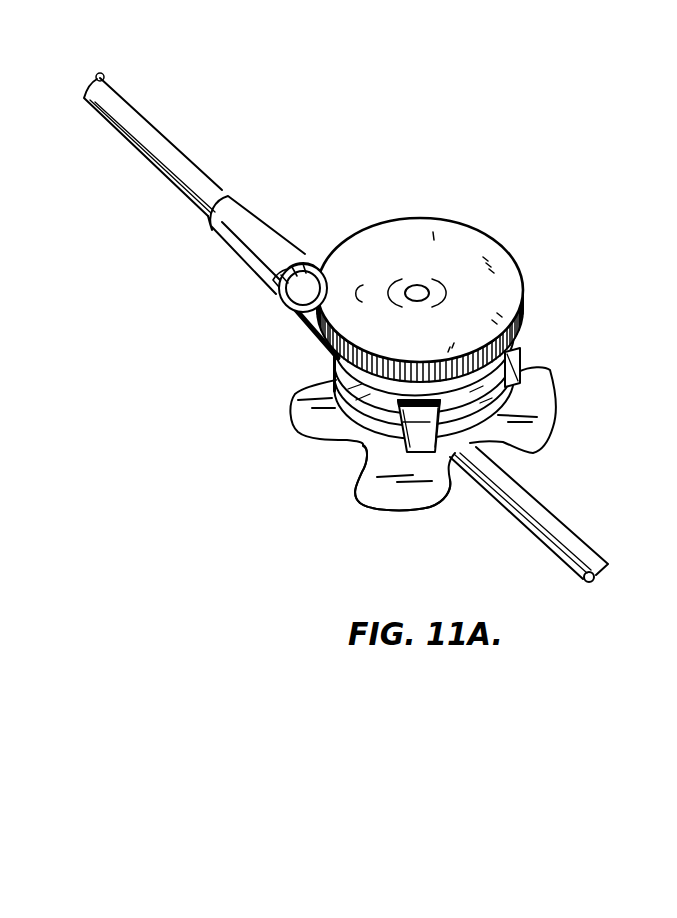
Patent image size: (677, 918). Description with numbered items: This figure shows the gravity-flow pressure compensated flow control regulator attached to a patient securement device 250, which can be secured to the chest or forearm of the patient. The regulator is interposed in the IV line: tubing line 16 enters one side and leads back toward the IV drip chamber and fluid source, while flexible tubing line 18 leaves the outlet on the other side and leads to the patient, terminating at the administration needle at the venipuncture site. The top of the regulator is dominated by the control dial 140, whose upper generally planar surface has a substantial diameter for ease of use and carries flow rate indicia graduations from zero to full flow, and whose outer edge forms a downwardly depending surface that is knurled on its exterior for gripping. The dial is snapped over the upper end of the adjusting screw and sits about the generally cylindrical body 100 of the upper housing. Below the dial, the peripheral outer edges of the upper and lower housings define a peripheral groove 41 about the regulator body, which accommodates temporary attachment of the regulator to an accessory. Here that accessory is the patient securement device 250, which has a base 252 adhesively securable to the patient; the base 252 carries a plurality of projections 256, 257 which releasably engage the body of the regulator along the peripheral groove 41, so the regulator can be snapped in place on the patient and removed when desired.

The tubing line 16 is at (166, 134).
The flexible tubing line 18 is at (545, 507).
The peripheral groove 41 is at (336, 379).
The generally cylindrical body 100 is at (429, 296).
The control dial 140 is at (503, 198).
The patient securement device 250 is at (255, 432).
The base 252 is at (363, 500).
The projection 256 is at (415, 437).
The projection 257 is at (521, 375).